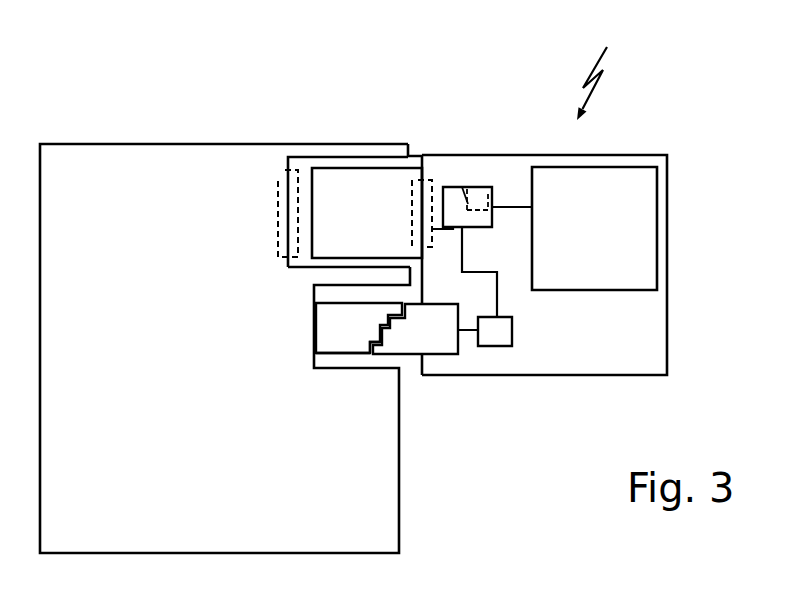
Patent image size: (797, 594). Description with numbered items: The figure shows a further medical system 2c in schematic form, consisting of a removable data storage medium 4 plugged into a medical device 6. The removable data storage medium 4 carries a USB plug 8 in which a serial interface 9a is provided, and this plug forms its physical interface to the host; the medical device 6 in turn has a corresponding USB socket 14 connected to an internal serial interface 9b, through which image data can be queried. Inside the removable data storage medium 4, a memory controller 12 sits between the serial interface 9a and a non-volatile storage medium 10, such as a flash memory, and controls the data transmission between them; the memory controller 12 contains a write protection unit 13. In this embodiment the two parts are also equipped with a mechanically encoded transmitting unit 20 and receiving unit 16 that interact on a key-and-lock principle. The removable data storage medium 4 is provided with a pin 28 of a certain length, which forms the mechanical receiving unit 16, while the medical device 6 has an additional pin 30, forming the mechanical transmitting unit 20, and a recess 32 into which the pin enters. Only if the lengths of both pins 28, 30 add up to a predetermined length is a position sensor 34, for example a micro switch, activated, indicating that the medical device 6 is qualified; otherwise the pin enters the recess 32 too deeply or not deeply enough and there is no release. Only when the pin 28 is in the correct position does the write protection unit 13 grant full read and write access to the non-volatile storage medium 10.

The medical system 2c is at (604, 69).
The removable data storage medium 4 is at (627, 130).
The medical device 6 is at (205, 143).
The USB plug 8 is at (371, 168).
The serial interface 9a is at (412, 181).
The internal serial interface 9b is at (278, 181).
The non-volatile storage medium 10 is at (647, 291).
The memory controller 12 is at (491, 188).
The write protection unit 13 is at (462, 187).
The USB socket 14 is at (327, 157).
The receiving unit 16 is at (454, 381).
The pin 28 is at (472, 364).
The transmitting unit 20 is at (293, 336).
The additional pin 30 is at (338, 355).
The recess 32 is at (362, 357).
The position sensor 34 is at (513, 331).